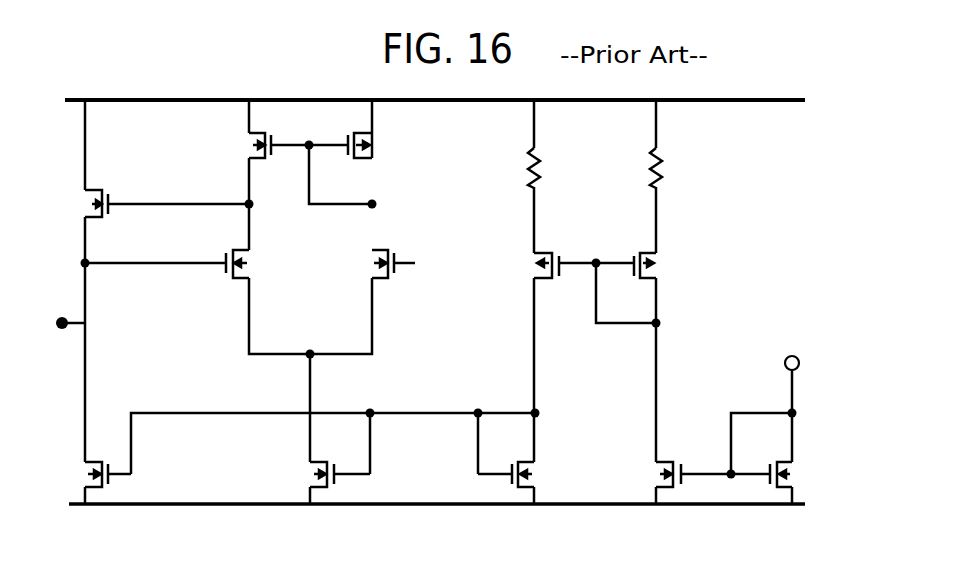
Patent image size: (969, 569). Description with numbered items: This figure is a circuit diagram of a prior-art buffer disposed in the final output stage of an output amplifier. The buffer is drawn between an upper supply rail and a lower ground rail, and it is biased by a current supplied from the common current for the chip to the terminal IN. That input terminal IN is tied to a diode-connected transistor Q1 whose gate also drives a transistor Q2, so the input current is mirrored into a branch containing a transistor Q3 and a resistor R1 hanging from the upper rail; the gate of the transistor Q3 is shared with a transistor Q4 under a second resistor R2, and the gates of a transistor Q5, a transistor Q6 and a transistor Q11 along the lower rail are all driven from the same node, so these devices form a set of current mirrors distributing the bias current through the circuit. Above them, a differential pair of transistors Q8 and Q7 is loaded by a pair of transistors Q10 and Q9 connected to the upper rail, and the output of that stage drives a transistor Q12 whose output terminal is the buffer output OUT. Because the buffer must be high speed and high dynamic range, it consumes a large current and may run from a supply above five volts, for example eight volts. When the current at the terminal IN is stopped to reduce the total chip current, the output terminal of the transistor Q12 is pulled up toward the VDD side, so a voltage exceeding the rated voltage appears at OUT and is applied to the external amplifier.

The transistor Q1 is at (795, 482).
The transistor Q2 is at (656, 480).
The transistor Q3 is at (665, 252).
The transistor Q4 is at (545, 249).
The transistor Q5 is at (548, 468).
The transistor Q6 is at (312, 468).
The transistor Q7 is at (391, 275).
The transistor Q8 is at (252, 270).
The transistor Q9 is at (373, 150).
The transistor Q10 is at (256, 142).
The transistor Q11 is at (87, 468).
The transistor Q12 is at (167, 214).
The resistor R1 is at (665, 179).
The resistor R2 is at (545, 179).
The output terminal OUT is at (93, 324).
The terminal IN is at (805, 364).